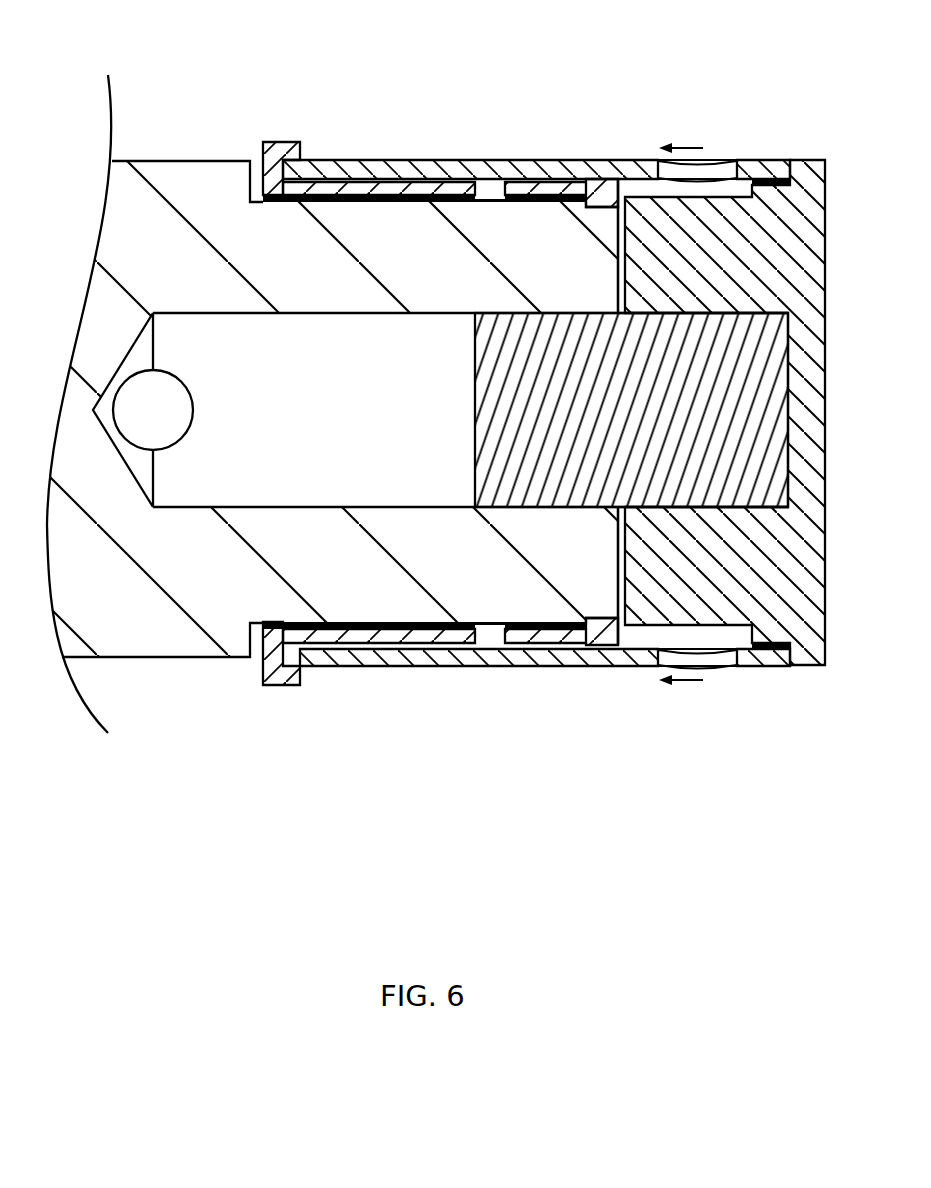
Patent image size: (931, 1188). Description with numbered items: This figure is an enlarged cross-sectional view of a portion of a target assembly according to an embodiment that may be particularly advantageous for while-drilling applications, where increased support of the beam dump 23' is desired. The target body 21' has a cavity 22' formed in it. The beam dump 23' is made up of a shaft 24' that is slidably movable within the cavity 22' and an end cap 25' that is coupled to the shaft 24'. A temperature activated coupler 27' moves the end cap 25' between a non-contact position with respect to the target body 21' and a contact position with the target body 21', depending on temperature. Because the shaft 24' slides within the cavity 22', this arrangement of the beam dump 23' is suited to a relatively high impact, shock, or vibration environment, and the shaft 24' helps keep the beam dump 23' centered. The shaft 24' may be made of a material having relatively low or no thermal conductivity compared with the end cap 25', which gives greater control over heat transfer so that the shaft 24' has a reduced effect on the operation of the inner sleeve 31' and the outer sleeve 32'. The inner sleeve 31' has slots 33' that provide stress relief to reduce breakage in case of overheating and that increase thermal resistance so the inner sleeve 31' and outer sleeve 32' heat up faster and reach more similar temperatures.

The target body 21' is at (309, 404).
The cavity 22' is at (414, 347).
The beam dump 23' is at (723, 451).
The shaft 24' is at (724, 391).
The end cap 25' is at (649, 272).
The temperature activated coupler 27' is at (408, 722).
The inner sleeve 31' is at (243, 397).
The outer sleeve 32' is at (536, 413).
The slots 33' is at (440, 382).